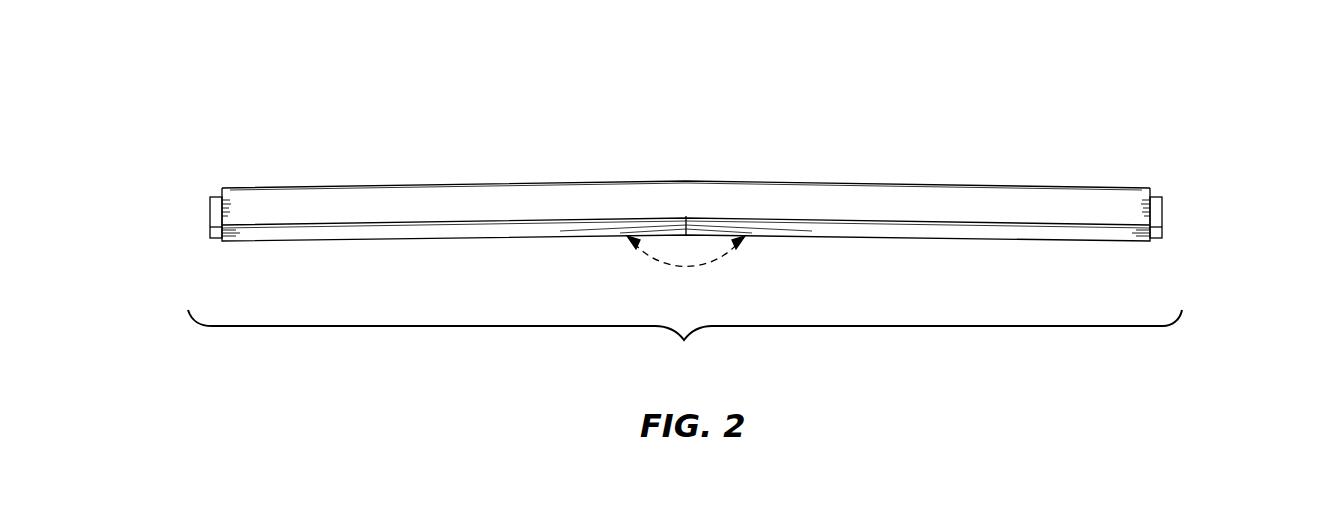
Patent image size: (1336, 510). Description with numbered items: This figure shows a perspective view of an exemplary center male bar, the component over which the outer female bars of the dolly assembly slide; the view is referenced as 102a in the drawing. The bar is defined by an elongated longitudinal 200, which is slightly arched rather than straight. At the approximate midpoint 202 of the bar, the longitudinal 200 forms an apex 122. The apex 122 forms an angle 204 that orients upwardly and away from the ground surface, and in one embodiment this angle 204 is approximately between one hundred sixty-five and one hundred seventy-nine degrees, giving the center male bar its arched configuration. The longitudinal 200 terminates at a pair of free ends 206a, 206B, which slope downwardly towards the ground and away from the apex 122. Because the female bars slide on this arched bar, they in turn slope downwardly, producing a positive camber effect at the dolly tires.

The monitor arm assembly 102a is at (220, 56).
The longitudinal 200 is at (688, 256).
The midpoint 202 is at (670, 162).
The angle 204 is at (700, 266).
The apex 122 is at (687, 180).
The free end 206a is at (210, 210).
The free end 206B is at (1164, 212).